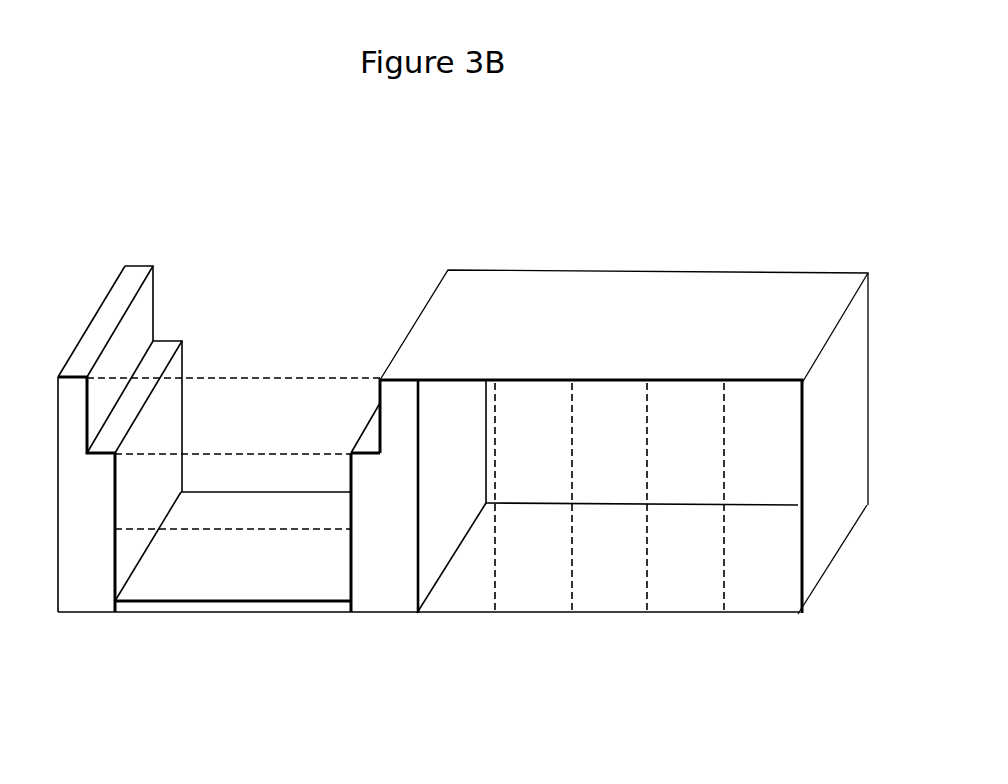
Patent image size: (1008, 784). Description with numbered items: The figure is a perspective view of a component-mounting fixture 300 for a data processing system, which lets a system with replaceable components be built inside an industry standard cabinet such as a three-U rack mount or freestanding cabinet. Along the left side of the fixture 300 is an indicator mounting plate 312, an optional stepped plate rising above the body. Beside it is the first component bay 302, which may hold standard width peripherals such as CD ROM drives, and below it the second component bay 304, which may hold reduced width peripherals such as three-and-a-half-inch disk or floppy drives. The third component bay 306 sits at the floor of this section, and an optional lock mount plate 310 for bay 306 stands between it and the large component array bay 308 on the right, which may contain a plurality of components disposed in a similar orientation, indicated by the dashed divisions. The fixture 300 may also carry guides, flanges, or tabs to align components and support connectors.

The component-mounting fixture 300 is at (743, 170).
The first component bay 302 is at (210, 408).
The second component bay 304 is at (295, 473).
The third component bay 306 is at (264, 659).
The component array bay 308 is at (455, 578).
The lock mount plate 310 is at (435, 671).
The indicator mounting plate 312 is at (103, 657).